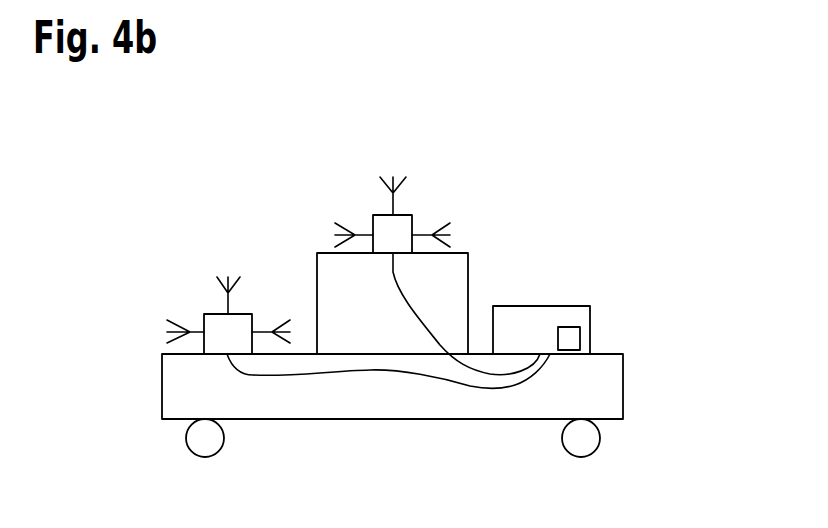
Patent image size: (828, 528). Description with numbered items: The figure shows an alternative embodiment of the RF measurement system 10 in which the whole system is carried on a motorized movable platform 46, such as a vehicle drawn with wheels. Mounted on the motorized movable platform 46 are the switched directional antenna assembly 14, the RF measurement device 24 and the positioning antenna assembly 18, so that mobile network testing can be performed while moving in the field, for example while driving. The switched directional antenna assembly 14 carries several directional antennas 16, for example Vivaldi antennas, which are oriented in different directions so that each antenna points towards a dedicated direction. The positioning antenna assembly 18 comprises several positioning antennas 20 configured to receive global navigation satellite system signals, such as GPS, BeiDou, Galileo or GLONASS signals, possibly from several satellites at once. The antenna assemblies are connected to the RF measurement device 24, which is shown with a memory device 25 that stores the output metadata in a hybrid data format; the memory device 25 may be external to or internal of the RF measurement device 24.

The RF measurement system 10 is at (555, 213).
The switched directional antenna assembly 14 is at (460, 198).
The directional antennas 16 is at (362, 232).
The positioning antenna assembly 18 is at (217, 255).
The positioning antennas 20 is at (193, 332).
The RF measurement device 24 is at (572, 306).
The memory device 25 is at (590, 337).
The motorized movable platform 46 is at (623, 398).